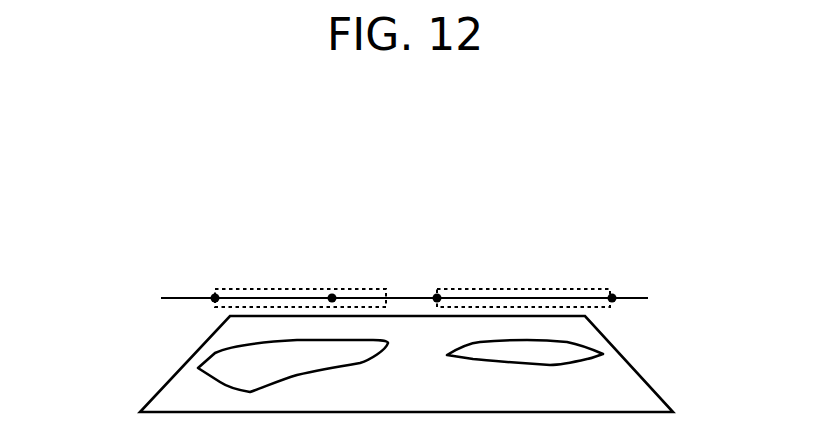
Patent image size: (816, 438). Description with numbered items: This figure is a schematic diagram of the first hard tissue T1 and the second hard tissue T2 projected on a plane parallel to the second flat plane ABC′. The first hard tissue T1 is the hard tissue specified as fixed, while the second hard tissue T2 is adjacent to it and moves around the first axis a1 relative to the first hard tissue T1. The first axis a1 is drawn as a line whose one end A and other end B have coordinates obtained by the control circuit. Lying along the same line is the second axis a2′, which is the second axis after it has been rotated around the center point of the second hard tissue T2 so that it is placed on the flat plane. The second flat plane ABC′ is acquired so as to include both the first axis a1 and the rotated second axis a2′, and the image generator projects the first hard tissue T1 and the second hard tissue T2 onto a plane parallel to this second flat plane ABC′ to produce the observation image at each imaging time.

The second flat plane ABC′ is at (183, 297).
The second axis a2′ is at (307, 297).
The first axis a1 is at (533, 297).
The one end of the first axis A is at (437, 297).
The other end of the first axis B is at (612, 297).
The second hard tissue T2 is at (215, 353).
The first hard tissue T1 is at (587, 346).